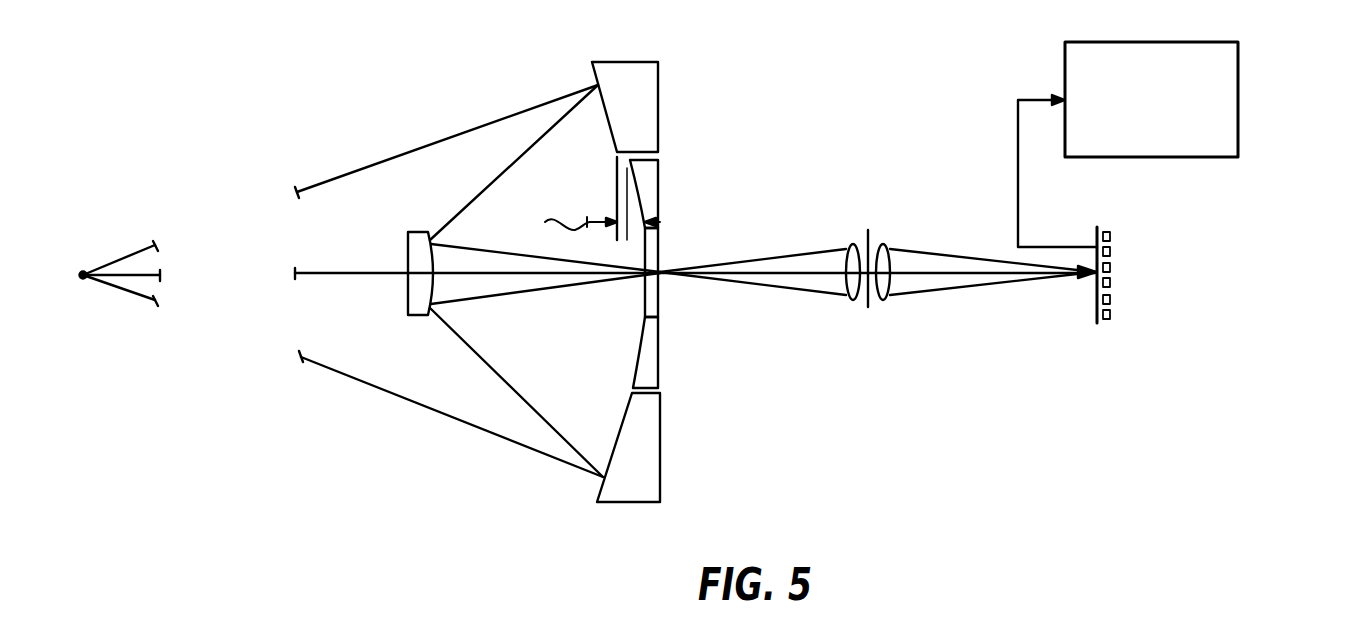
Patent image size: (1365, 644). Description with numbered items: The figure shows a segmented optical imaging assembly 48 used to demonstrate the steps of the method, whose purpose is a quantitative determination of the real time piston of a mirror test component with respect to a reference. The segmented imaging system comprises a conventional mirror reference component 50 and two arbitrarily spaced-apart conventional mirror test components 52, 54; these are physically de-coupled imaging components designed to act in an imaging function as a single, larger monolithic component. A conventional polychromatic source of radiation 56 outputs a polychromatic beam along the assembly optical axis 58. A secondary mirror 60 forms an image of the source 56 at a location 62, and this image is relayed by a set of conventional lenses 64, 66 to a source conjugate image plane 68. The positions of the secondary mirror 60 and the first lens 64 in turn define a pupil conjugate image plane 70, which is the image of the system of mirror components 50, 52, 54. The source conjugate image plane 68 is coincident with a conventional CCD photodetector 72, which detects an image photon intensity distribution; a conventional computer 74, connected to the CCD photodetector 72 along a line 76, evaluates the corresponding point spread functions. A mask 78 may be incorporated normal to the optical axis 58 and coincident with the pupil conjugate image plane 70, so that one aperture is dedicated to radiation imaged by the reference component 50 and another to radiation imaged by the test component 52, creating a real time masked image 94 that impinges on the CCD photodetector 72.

The optical assembly 48 is at (759, 101).
The mirror reference component 50 is at (660, 198).
The mirror test component 52 is at (658, 97).
The mirror test component 54 is at (662, 450).
The polychromatic source of radiation 56 is at (84, 272).
The assembly optical axis 58 is at (360, 278).
The secondary mirror 60 is at (420, 232).
The location 62 is at (663, 272).
The lens 64 is at (852, 300).
The lens 66 is at (884, 300).
The source conjugate image plane 68 is at (1097, 300).
The pupil conjugate image plane 70 is at (868, 232).
The CCD photodetector 72 is at (1105, 237).
The computer 74 is at (1238, 118).
The line 76 is at (1018, 185).
The mask 78 is at (872, 323).
The real time masked image 94 is at (1093, 278).